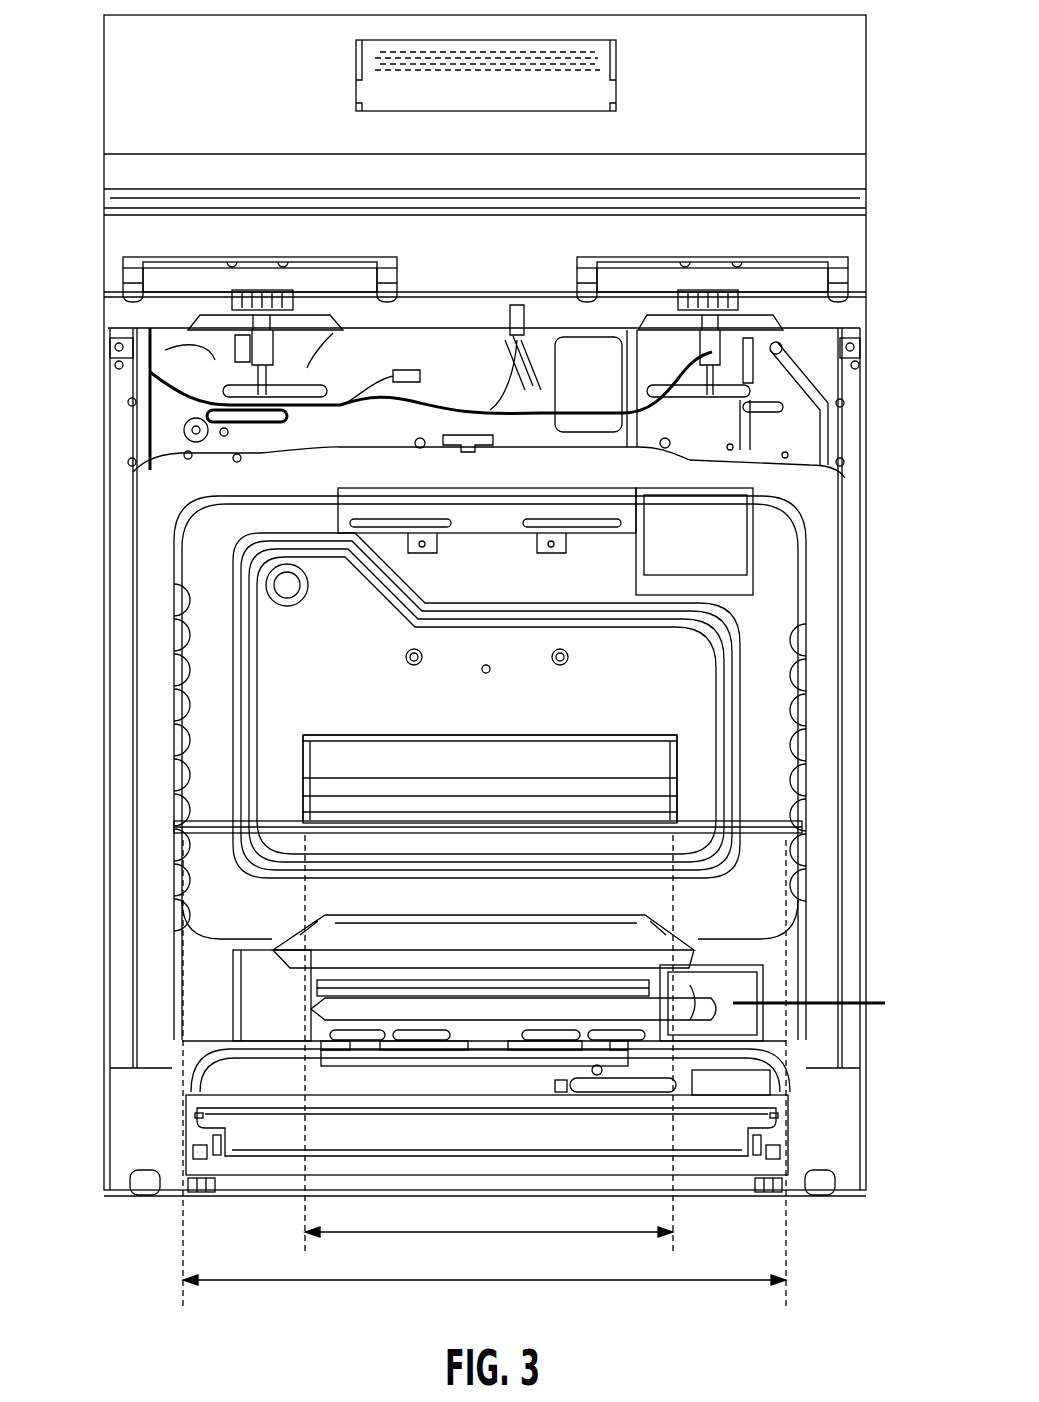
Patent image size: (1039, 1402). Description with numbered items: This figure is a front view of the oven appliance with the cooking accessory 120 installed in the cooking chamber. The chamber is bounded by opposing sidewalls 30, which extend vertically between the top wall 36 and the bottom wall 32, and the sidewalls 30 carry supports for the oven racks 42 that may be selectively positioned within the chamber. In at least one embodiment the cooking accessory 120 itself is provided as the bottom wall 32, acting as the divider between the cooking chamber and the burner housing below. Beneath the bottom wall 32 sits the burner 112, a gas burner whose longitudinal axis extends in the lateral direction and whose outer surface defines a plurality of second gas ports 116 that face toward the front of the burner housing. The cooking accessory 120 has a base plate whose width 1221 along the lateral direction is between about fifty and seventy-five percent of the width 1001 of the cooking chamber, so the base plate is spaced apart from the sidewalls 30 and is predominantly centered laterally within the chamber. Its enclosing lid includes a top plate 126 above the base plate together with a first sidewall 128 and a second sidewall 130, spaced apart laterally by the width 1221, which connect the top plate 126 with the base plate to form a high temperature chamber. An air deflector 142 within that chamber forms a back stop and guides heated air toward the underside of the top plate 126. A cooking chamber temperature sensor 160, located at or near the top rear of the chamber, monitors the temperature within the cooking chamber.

The sidewalls 30 is at (202, 633).
The bottom wall 32 is at (712, 933).
The top wall 36 is at (462, 470).
The oven racks 42 is at (758, 822).
The burner 112 is at (707, 1007).
The second gas ports 116 is at (537, 1015).
The cooking accessory 120 is at (486, 739).
The top plate 126 is at (630, 735).
The first sidewall 128 is at (305, 785).
The second sidewall 130 is at (677, 765).
The air deflector 142 is at (375, 776).
The cooking chamber temperature sensor 160 is at (287, 573).
The width of base plate 1221 is at (452, 1232).
The width of cooking chamber 1001 is at (452, 1280).